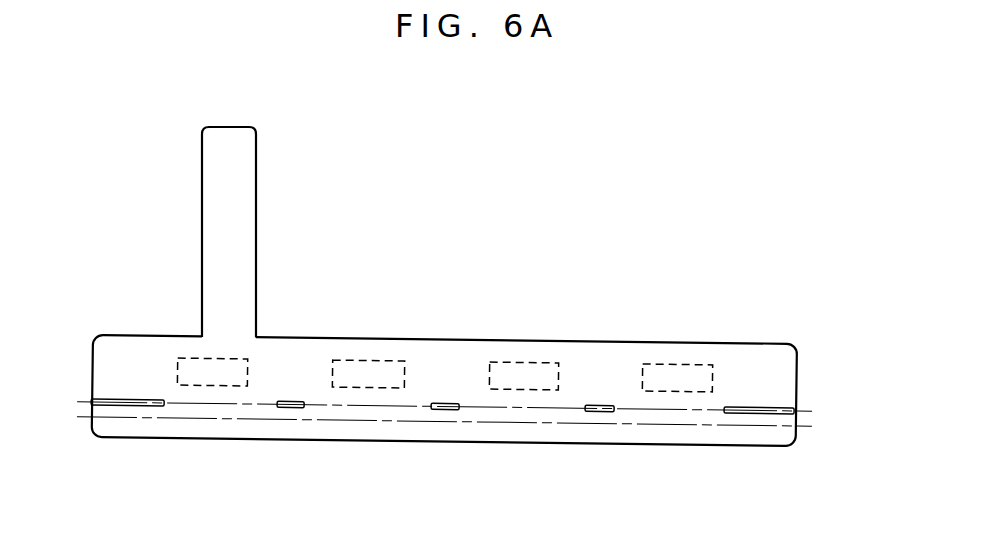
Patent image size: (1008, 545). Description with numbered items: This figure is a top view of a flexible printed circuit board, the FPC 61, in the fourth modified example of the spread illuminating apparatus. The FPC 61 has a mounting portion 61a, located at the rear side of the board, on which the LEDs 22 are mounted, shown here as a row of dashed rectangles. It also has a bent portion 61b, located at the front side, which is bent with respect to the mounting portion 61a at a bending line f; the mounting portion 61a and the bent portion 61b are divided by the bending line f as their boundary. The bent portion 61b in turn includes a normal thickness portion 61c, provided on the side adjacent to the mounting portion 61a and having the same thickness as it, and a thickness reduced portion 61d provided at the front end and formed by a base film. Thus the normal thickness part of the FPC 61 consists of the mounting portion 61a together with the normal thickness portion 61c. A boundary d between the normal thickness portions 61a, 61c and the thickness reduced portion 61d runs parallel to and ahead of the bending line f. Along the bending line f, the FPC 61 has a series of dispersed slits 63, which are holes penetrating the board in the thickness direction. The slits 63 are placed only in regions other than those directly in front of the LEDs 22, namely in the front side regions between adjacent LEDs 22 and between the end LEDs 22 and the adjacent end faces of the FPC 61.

The FPC 61 is at (711, 243).
The mounting portion 61a is at (758, 370).
The bent portion 61b is at (768, 292).
The normal thickness portion 61c is at (768, 419).
The thickness reduced portion 61d is at (780, 432).
The slits 63 is at (119, 399).
The LEDs 22 is at (208, 363).
The bending line f is at (87, 400).
The boundary d is at (87, 422).